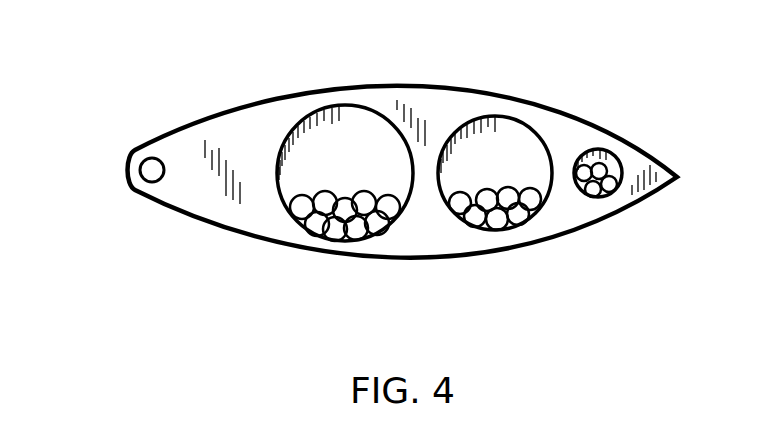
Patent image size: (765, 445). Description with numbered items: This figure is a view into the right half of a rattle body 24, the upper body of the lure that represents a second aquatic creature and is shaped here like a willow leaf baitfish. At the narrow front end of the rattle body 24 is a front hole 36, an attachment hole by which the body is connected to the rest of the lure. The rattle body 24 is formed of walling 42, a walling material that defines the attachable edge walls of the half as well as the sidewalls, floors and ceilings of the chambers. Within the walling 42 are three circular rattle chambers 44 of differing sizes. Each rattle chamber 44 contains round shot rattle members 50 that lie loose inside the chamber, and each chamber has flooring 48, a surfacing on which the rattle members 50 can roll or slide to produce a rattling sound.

The rattle body 24 is at (603, 127).
The front hole 36 is at (147, 170).
The walling 42 is at (207, 192).
The rattle chamber 44 is at (590, 162).
The flooring 48 is at (345, 232).
The rattle members 50 is at (594, 190).